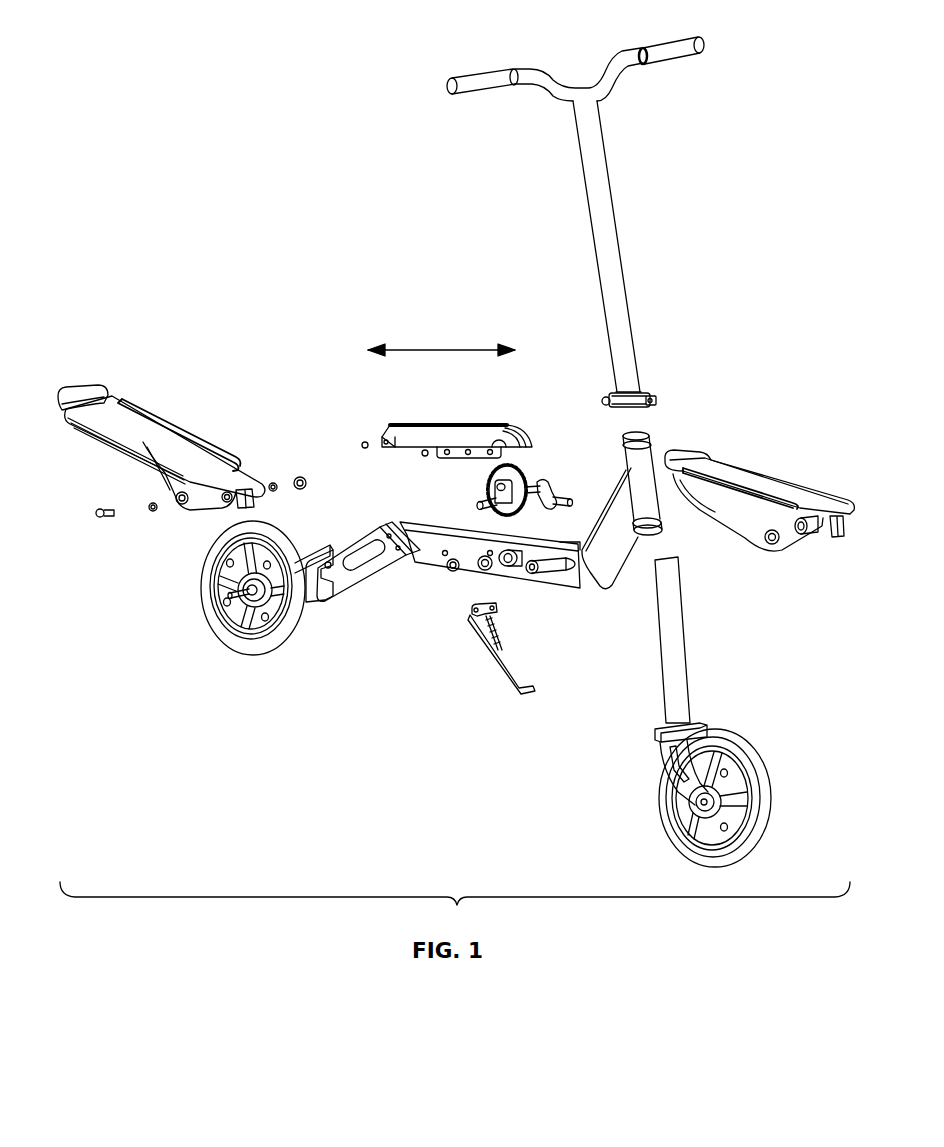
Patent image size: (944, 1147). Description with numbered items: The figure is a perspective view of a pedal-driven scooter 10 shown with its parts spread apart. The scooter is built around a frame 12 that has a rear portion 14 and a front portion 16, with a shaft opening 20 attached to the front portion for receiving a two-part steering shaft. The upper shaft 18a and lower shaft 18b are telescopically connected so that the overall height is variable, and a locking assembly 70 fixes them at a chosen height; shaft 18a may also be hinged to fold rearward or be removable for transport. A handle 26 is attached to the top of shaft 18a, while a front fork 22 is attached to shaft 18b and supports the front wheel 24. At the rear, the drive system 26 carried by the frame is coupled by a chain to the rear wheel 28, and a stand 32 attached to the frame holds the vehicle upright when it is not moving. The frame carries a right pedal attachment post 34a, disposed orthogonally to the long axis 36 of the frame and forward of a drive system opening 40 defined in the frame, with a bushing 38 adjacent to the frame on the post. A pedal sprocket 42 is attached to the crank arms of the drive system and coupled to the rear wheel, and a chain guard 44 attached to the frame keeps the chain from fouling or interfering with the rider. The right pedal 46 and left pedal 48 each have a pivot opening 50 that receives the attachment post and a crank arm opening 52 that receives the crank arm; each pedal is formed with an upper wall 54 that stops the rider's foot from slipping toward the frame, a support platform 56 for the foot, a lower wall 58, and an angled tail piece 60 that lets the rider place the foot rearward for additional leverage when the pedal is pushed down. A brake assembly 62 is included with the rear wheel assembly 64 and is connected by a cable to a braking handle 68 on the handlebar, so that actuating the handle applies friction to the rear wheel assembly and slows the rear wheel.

The scooter 10 is at (355, 720).
The frame 12 is at (433, 565).
The rear portion 14 is at (370, 540).
The front portion 16 is at (615, 500).
The shaft 18a is at (612, 245).
The shaft 18b is at (690, 640).
The shaft opening 20 is at (650, 445).
The front fork 22 is at (658, 740).
The front wheel 24 is at (760, 800).
The handle 26 is at (612, 70).
The rear wheel 28 is at (274, 603).
The stand 32 is at (490, 655).
The right pedal attachment post 34a is at (588, 565).
The long axis 36 is at (441, 349).
The bushing 38 is at (567, 603).
The drive system opening 40 is at (500, 575).
The pedal sprocket 42 is at (488, 473).
The chain guard 44 is at (445, 435).
The right pedal 46 is at (449, 469).
The left pedal 48 is at (785, 485).
The pivot opening 50 is at (217, 498).
The crank arm opening 52 is at (178, 500).
The upper wall 54 is at (185, 440).
The support platform 56 is at (138, 443).
The lower wall 58 is at (93, 438).
The tail piece 60 is at (80, 400).
The brake assembly 62 is at (292, 610).
The rear wheel assembly 64 is at (180, 650).
The braking handle 68 is at (542, 72).
The locking assembly 70 is at (652, 398).